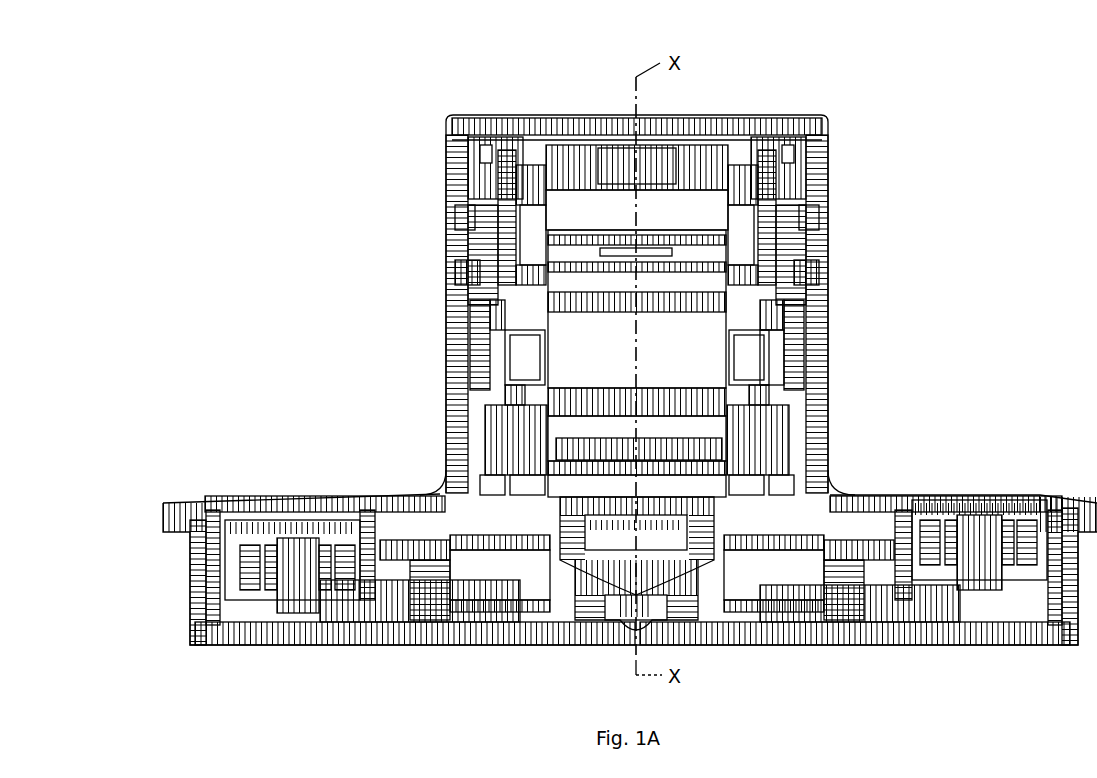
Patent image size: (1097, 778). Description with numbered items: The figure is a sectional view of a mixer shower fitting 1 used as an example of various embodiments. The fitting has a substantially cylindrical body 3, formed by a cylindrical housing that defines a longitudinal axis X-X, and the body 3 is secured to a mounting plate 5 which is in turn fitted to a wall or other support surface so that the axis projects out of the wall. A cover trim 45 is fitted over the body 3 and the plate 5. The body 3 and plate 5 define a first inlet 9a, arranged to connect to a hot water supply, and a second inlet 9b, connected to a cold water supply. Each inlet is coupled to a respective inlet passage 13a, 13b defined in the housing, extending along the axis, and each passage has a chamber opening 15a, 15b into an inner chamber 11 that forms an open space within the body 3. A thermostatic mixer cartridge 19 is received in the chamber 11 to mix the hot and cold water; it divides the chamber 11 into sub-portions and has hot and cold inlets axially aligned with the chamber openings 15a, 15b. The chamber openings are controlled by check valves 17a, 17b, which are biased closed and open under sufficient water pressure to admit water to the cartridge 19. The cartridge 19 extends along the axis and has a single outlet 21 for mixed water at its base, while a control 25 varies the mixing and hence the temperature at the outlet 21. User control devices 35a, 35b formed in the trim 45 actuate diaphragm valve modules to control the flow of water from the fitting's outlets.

The mixer shower fitting 1 is at (1002, 50).
The body 3 is at (753, 297).
The mounting plate 5 is at (895, 632).
The first inlet 9a is at (775, 625).
The second inlet 9b is at (485, 632).
The inner chamber 11 is at (548, 320).
The inlet passage 13a is at (780, 590).
The inlet passage 13b is at (500, 540).
The chamber opening 15a is at (724, 434).
The chamber opening 15b is at (540, 348).
The check valve 17a is at (773, 437).
The check valve 17b is at (497, 435).
The thermostatic mixer cartridge 19 is at (684, 330).
The outlet 21 is at (582, 540).
The control 25 is at (752, 122).
The user control device 35a is at (990, 495).
The user control device 35b is at (268, 497).
The cover trim 45 is at (822, 314).